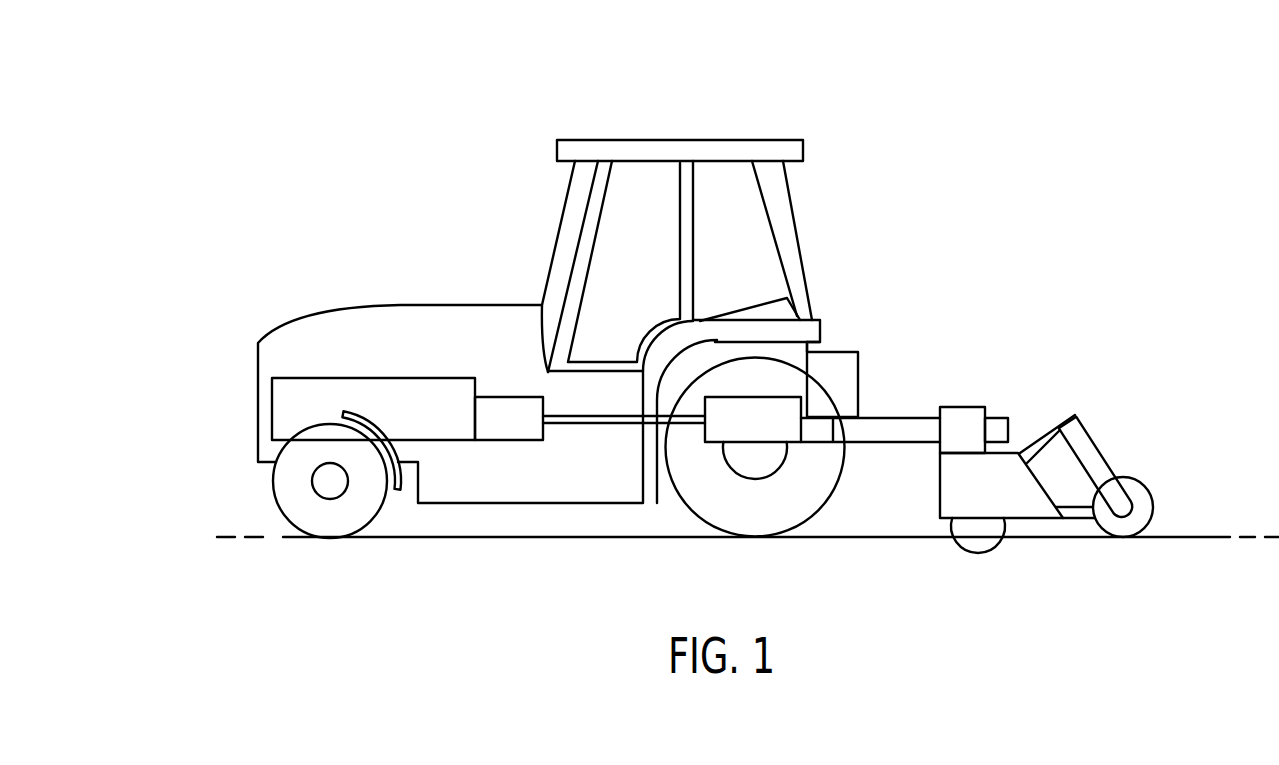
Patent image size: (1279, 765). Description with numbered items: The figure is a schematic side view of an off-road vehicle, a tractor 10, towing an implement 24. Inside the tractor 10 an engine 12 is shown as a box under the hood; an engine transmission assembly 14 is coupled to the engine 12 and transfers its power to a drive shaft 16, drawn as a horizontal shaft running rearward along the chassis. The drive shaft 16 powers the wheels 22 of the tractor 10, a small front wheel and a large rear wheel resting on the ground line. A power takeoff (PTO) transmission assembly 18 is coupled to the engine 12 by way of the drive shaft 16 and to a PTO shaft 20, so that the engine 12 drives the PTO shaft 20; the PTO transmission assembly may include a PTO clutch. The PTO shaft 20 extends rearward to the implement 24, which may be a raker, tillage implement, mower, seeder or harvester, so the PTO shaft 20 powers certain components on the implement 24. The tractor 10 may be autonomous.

The tractor 10 is at (853, 63).
The engine 12 is at (368, 378).
The engine transmission assembly 14 is at (510, 440).
The drive shaft 16 is at (614, 423).
The power takeoff (PTO) transmission assembly 18 is at (802, 407).
The PTO shaft 20 is at (817, 442).
The wheels 22 is at (287, 495).
The implement 24 is at (1033, 385).